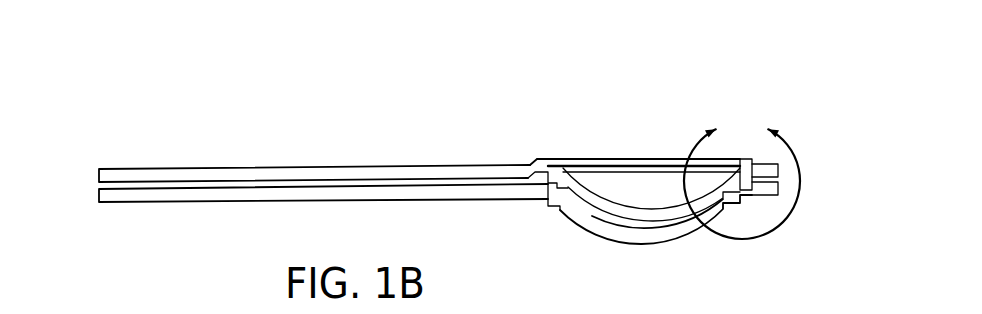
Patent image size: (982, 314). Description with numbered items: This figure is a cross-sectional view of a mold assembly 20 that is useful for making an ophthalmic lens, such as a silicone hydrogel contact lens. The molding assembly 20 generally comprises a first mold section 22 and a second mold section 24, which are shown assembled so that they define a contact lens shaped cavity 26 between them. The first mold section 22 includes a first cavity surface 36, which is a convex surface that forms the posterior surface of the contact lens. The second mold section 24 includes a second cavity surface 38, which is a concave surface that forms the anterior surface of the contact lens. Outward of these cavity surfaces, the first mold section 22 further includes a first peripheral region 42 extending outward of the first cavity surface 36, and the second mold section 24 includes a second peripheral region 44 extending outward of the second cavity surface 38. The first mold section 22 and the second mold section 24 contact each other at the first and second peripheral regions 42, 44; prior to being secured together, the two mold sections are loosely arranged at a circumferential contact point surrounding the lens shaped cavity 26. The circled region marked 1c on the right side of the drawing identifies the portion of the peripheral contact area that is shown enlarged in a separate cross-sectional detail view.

The mold assembly 20 is at (609, 71).
The first mold section 22 is at (494, 160).
The second mold section 24 is at (504, 207).
The first peripheral region 42 is at (540, 159).
The first cavity surface 36 is at (609, 213).
The second cavity surface 38 is at (616, 230).
The contact lens shaped cavity 26 is at (646, 230).
The second peripheral region 44 is at (767, 196).
The detail view indicator 1c is at (742, 171).